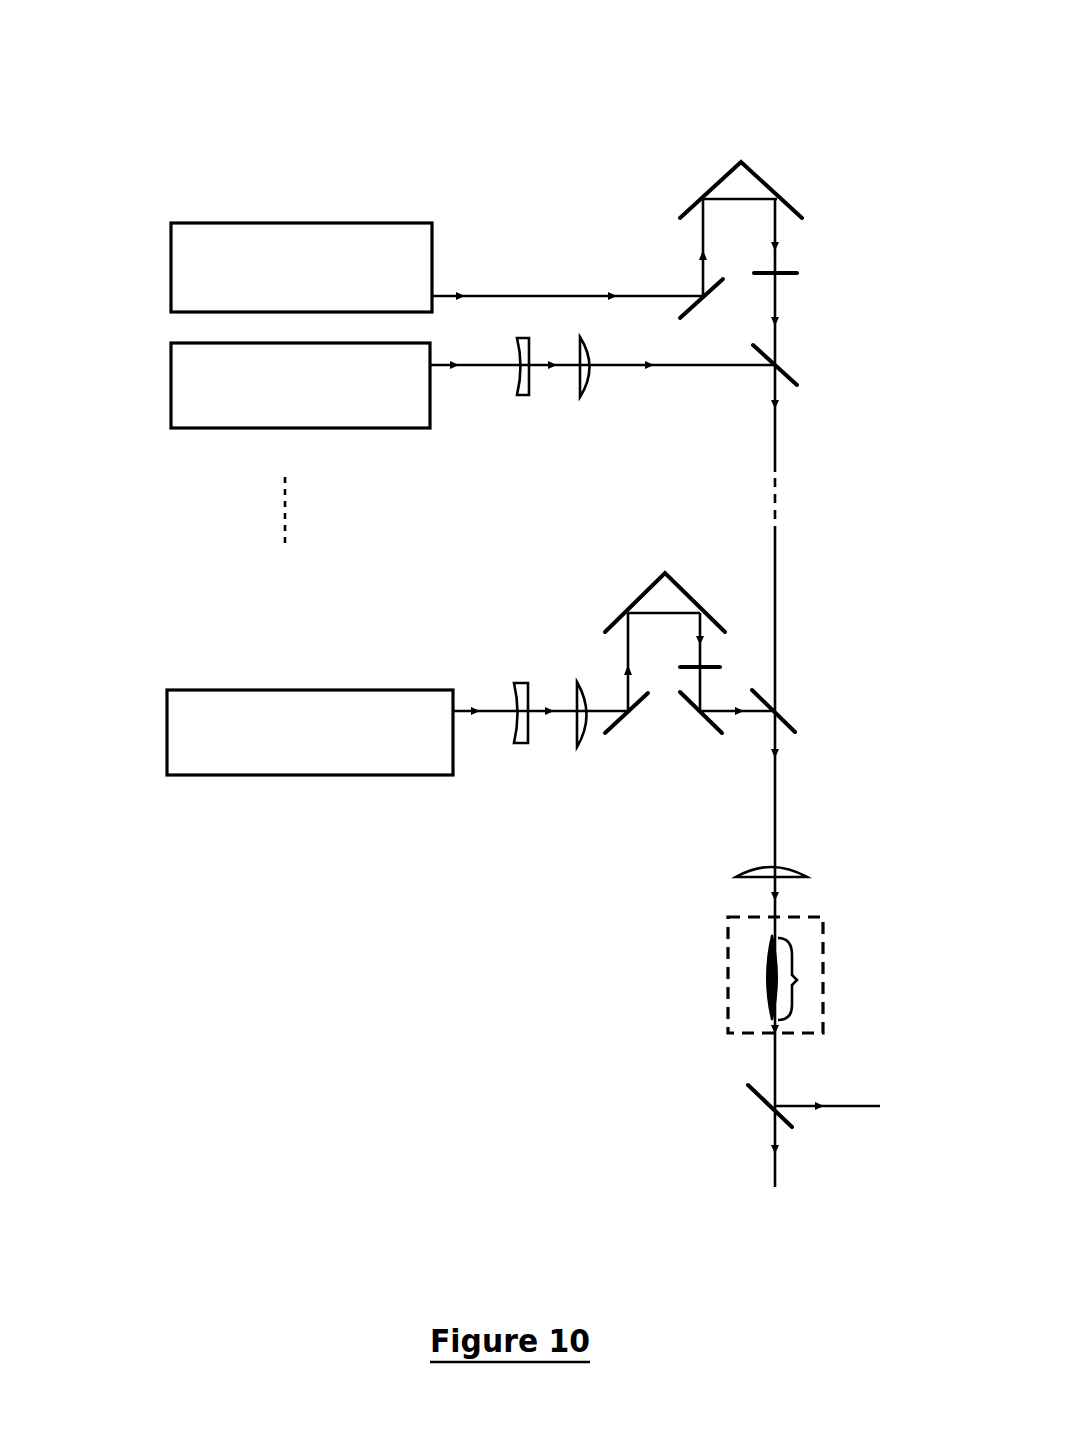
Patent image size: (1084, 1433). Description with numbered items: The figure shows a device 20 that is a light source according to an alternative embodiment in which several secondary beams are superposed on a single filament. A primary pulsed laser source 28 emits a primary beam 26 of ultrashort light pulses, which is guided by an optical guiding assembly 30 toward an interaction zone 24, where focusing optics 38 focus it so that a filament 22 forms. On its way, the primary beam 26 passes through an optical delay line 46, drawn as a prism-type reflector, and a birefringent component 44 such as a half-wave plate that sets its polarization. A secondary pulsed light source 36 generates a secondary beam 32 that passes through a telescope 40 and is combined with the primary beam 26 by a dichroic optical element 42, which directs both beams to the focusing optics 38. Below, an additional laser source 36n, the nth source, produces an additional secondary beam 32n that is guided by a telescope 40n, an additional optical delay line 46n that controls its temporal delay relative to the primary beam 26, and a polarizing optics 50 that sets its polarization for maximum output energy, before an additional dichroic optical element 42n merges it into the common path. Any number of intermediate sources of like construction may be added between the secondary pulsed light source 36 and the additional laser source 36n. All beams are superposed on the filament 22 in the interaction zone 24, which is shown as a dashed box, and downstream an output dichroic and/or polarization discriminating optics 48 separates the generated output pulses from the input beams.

The device 20 is at (518, 88).
The filament 22 is at (797, 980).
The interaction zone 24 is at (827, 918).
The primary beam 26 is at (548, 293).
The primary pulsed laser source 28 is at (302, 223).
The optical guiding assembly 30 is at (893, 167).
The secondary beam 32 is at (625, 366).
The additional secondary beam 32n is at (488, 710).
The secondary pulsed light source 36 is at (167, 382).
The additional laser source 36n is at (167, 724).
The focusing optics 38 is at (810, 873).
The telescope 40 is at (612, 393).
The additional telescope 40n is at (497, 763).
The dichroic optical element 42 is at (800, 378).
The additional dichroic optical element 42n is at (800, 728).
The birefringent component 44 is at (808, 275).
The optical delay line 46 is at (741, 158).
The additional optical delay line 46n is at (665, 570).
The output dichroic and/or polarization discriminating optics 48 is at (745, 1085).
The polarizing optics 50 is at (725, 662).